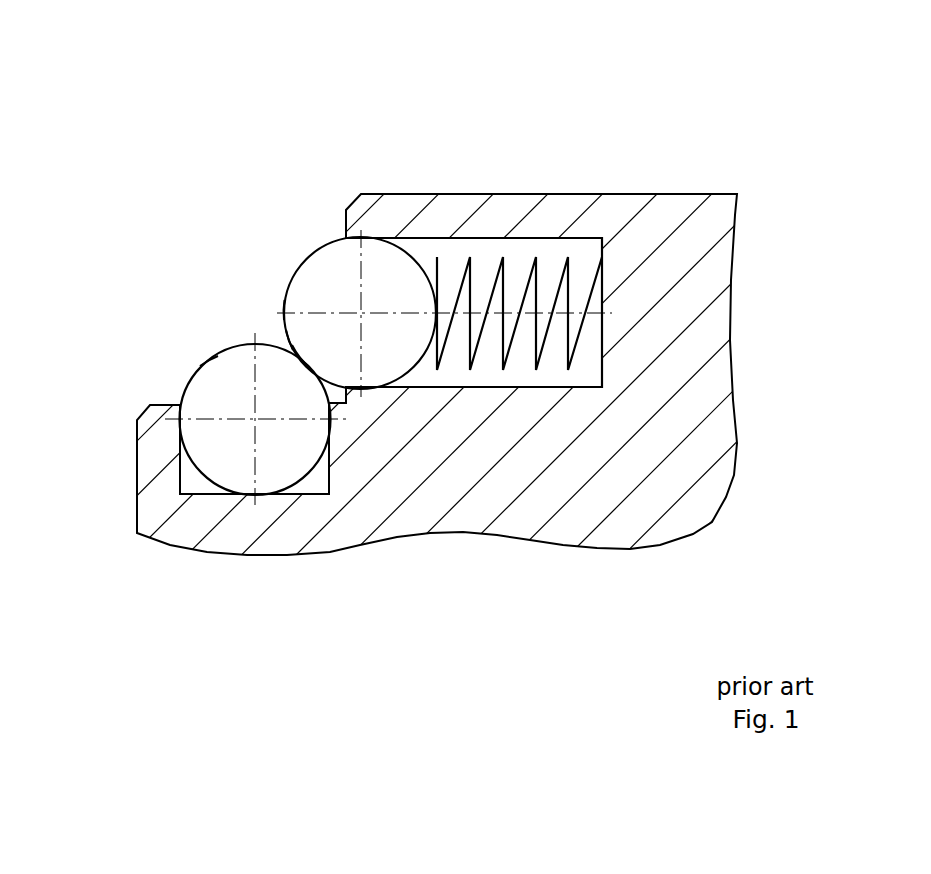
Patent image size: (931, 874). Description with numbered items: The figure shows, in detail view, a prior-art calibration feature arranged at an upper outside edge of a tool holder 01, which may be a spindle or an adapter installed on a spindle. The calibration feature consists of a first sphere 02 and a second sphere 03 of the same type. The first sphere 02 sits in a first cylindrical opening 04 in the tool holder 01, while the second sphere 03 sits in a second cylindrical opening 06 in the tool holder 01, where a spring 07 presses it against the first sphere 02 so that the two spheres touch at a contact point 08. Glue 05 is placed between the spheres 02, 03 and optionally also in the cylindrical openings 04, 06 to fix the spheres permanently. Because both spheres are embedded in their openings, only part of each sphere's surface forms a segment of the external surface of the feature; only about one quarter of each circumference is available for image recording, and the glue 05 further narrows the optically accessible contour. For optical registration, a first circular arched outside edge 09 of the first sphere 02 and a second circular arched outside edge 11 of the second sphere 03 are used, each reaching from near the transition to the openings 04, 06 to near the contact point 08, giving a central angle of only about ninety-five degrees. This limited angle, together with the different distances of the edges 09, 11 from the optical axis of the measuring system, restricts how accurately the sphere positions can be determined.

The tool holder 01 is at (563, 210).
The first sphere 02 is at (208, 400).
The second sphere 03 is at (327, 278).
The first cylindrical opening 04 is at (193, 483).
The glue 05 is at (292, 349).
The second cylindrical opening 06 is at (423, 250).
The spring 07 is at (565, 263).
The contact point 08 is at (310, 367).
The first circular arched outside edge 09 is at (216, 358).
The second circular arched outside edge 11 is at (285, 301).